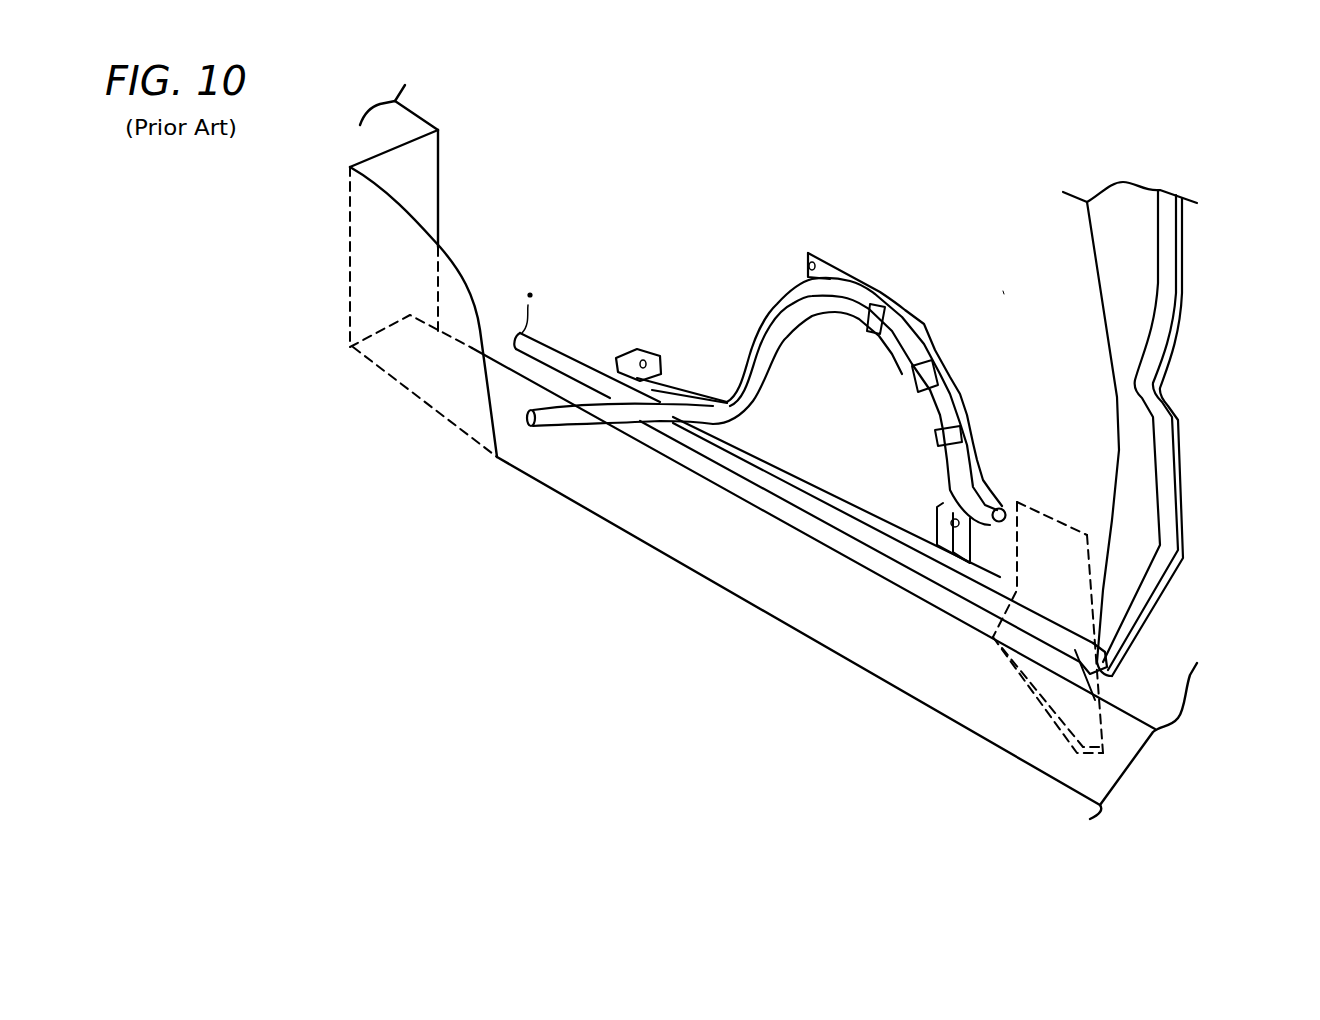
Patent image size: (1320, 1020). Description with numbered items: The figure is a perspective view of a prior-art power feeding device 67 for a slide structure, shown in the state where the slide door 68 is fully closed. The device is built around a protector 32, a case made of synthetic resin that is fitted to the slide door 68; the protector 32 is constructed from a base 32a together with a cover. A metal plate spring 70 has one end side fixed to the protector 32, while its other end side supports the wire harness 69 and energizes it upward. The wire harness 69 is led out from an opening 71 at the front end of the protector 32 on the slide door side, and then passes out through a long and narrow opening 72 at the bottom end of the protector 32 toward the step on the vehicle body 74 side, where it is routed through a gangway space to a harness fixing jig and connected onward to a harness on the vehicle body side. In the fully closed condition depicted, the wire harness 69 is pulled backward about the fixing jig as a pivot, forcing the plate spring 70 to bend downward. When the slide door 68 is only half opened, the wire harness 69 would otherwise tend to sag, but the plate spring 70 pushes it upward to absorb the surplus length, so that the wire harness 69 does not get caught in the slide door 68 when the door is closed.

The protector 32 is at (907, 304).
The base 32a is at (810, 433).
The power feeding device 67 is at (963, 346).
The slide door 68 is at (1178, 475).
The wire harness 69 is at (572, 427).
The plate spring 70 is at (927, 400).
The opening 71 is at (1000, 505).
The opening 72 is at (837, 500).
The vehicle body 74 is at (1120, 707).